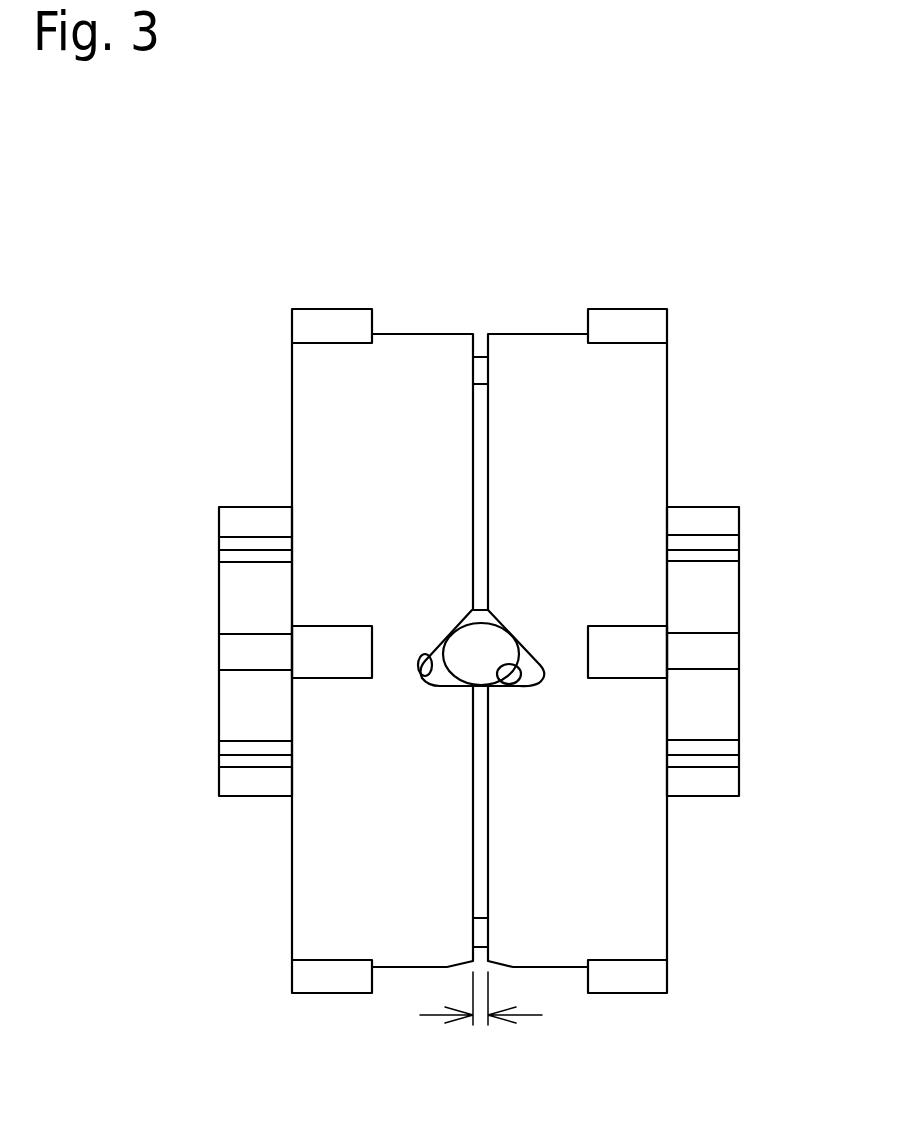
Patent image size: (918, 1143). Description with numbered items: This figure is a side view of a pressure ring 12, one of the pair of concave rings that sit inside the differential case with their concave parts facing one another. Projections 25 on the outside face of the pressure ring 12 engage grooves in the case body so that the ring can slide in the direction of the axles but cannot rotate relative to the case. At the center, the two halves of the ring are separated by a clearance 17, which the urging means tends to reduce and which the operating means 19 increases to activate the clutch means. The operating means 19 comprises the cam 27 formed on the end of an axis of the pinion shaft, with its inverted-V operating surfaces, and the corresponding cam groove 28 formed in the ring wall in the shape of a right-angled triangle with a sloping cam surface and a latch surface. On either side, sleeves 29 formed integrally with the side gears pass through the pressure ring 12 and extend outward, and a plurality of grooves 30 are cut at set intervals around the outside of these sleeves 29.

The pressure ring 12 is at (513, 340).
The projection 25 is at (332, 315).
The sleeve 29 is at (240, 512).
The groove 30 is at (228, 748).
The operating means 19 is at (509, 613).
The cam 27 is at (430, 686).
The cam groove 28 is at (420, 664).
The clearance 17 is at (478, 1027).